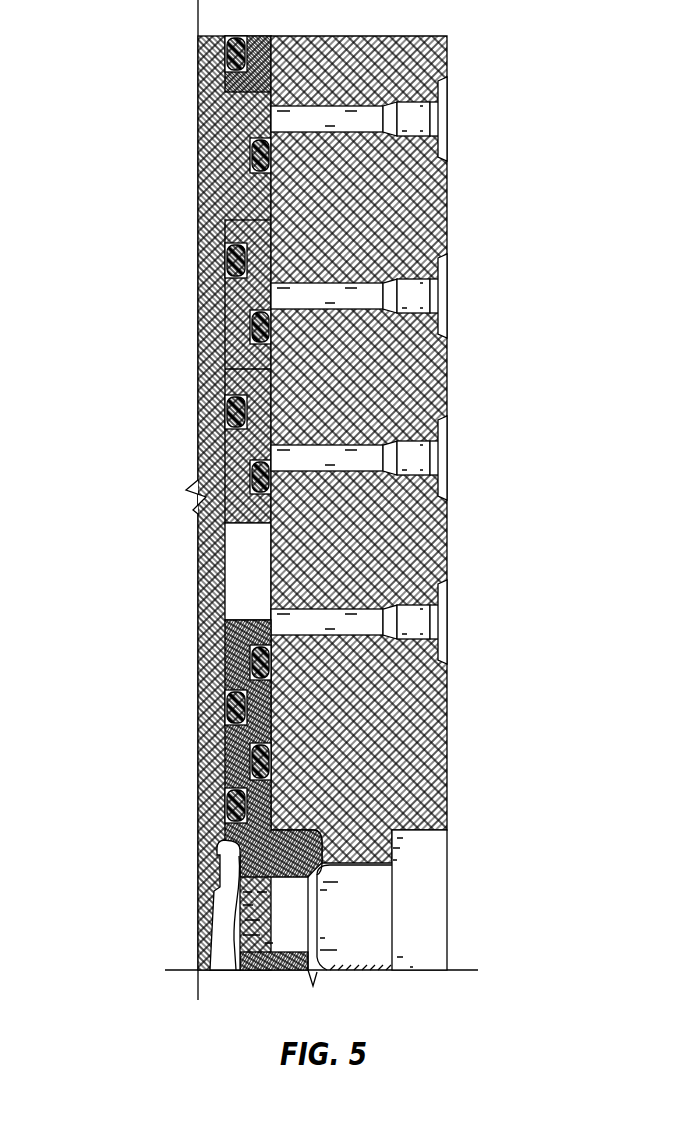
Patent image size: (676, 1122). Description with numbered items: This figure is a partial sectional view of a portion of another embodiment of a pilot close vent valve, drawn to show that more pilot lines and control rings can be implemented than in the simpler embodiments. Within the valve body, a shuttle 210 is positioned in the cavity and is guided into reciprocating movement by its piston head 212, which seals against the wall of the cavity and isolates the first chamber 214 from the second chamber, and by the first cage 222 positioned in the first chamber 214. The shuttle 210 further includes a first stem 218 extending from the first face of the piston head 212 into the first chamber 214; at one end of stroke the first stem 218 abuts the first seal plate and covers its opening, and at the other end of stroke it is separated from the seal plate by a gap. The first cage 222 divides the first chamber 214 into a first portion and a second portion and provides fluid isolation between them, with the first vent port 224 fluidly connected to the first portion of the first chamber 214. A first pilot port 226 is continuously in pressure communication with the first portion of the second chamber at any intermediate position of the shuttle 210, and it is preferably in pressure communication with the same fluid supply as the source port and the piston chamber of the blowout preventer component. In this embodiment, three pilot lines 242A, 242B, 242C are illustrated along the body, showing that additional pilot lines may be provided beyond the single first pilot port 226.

The shuttle 210 is at (169, 503).
The piston head 212 is at (255, 183).
The first stem 218 is at (204, 578).
The first cage 222 is at (288, 863).
The first chamber 214 is at (248, 922).
The first vent port 224 is at (447, 905).
The first pilot port 226 is at (448, 118).
The pilot line 242A is at (448, 298).
The pilot line 242B is at (448, 460).
The pilot line 242C is at (448, 624).